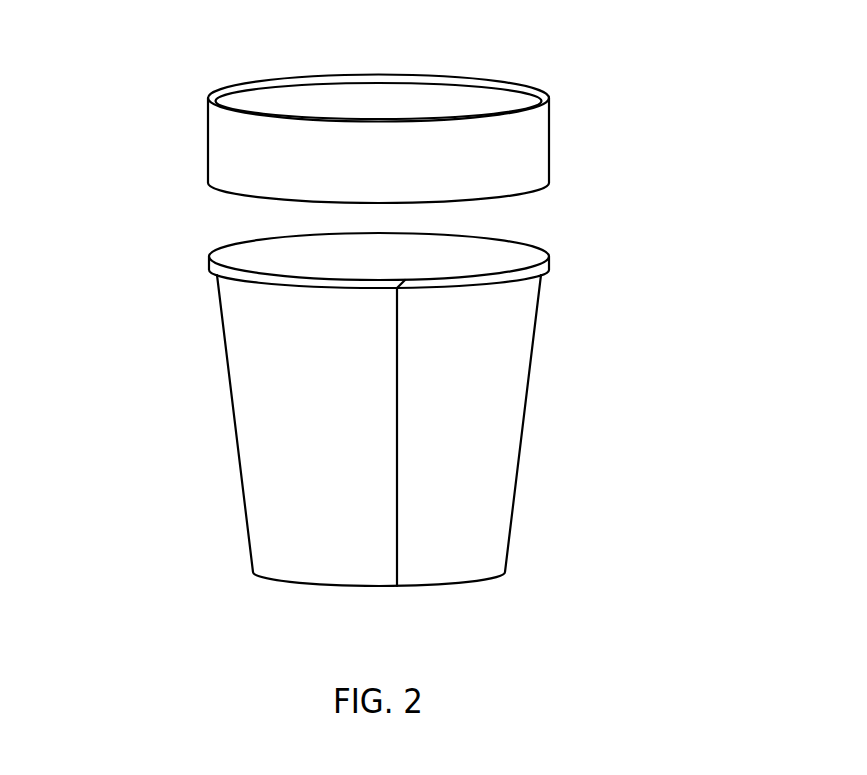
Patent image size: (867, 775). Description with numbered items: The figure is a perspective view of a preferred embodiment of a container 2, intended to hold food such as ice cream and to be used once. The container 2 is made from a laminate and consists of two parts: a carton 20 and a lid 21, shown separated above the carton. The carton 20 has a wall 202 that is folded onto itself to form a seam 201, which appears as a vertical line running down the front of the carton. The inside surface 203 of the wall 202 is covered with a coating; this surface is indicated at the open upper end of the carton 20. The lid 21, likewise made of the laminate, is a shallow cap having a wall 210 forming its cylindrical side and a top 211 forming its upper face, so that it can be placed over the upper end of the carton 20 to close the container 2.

The container 2 is at (405, 293).
The lid 21 is at (351, 101).
The top 211 is at (457, 100).
The wall 210 is at (549, 127).
The carton 20 is at (355, 386).
The inside surface 203 is at (508, 249).
The wall 202 is at (507, 397).
The seam 201 is at (493, 433).